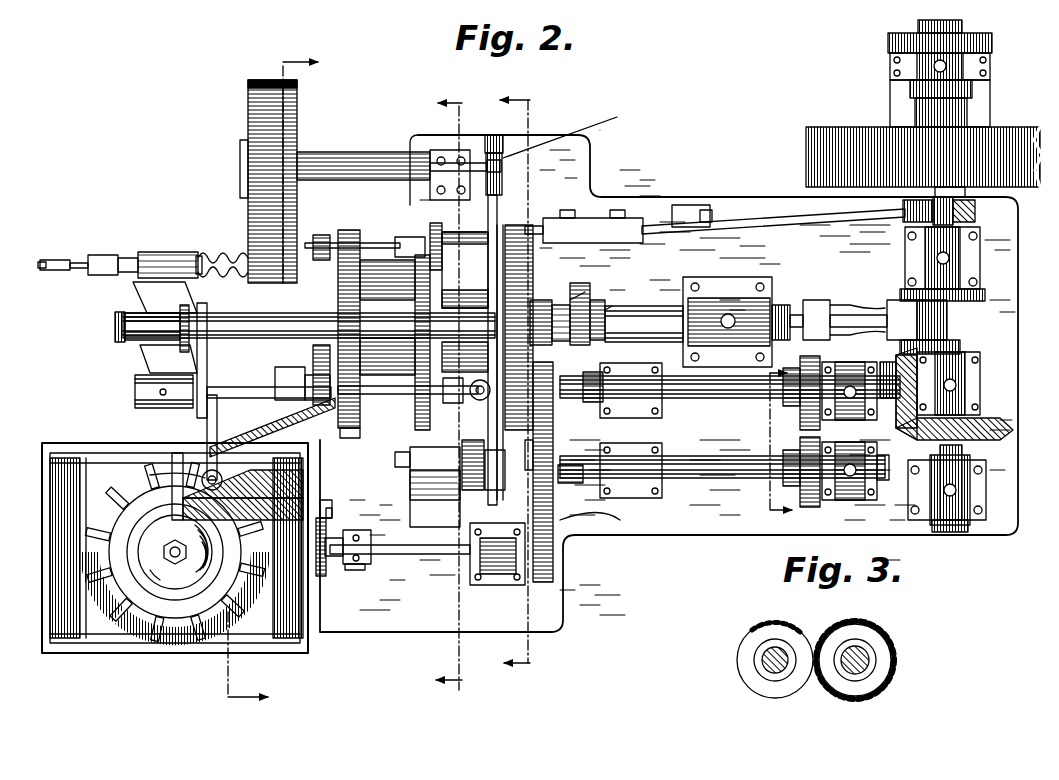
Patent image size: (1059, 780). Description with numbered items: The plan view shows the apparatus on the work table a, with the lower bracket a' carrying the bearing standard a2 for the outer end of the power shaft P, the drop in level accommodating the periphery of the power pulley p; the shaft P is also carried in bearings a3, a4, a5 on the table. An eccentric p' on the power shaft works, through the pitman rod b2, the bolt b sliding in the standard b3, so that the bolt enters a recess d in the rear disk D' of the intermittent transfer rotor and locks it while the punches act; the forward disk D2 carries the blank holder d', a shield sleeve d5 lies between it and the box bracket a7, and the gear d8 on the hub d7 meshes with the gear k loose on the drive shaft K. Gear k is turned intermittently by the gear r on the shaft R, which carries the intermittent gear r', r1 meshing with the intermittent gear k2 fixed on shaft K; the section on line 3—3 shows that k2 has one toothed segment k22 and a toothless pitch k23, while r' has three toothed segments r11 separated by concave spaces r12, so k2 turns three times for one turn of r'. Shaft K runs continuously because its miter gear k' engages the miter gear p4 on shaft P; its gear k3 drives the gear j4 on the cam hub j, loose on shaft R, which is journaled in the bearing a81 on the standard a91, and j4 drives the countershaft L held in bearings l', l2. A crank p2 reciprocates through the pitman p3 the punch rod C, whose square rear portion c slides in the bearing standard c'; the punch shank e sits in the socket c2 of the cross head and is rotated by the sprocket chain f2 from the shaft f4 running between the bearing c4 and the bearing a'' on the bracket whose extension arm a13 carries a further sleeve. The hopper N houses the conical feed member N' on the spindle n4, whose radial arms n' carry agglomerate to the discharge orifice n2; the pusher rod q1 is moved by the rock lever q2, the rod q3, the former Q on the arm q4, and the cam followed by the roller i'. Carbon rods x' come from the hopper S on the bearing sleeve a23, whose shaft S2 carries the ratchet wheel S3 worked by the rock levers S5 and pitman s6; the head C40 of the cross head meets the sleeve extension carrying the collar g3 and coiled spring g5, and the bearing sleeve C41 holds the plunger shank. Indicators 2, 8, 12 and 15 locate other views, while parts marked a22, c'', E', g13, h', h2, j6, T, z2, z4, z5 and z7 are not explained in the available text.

In FIG. 2, the section line 2 is at (550, 585).
In FIG. 2, the section line 3 is at (773, 444).
In FIG. 2, the section line 8 is at (522, 387).
In FIG. 2, the section line 12 is at (261, 386).
In FIG. 2, the section line 15 is at (460, 395).
In FIG. 2, the base plate a is at (669, 381).
In FIG. 2, the standard a' is at (956, 103).
In FIG. 2, the bearing cap a2 is at (890, 70).
In FIG. 2, the bearing a3 is at (980, 262).
In FIG. 2, the bearing a4 is at (982, 390).
In FIG. 2, the bearing a5 is at (985, 494).
In FIG. 2, the gear a7 is at (420, 424).
In FIG. 2, the sleeve a13 is at (465, 302).
In FIG. 2, the gear a22 is at (438, 230).
In FIG. 2, the cylinder a23 is at (385, 162).
In FIG. 2, the bracket a81 is at (435, 487).
In FIG. 2, the lug a91 is at (410, 452).
In FIG. 2, the main shaft a'' is at (309, 326).
In FIG. 2, the rod coupling b is at (672, 212).
In FIG. 2, the rod b2 is at (745, 212).
In FIG. 2, the slide box b3 is at (584, 227).
In FIG. 2, the shaft c is at (644, 323).
In FIG. 2, the bearing c' is at (736, 322).
In FIG. 2, the sleeve c'' is at (152, 314).
In FIG. 2, the block c2 is at (135, 392).
In FIG. 2, the bearing flange c4 is at (125, 314).
In FIG. 2, the coupling C is at (790, 306).
In FIG. 2, the slide C40 is at (158, 255).
In FIG. 2, the rod C41 is at (93, 258).
In FIG. 2, the clutch d is at (550, 302).
In FIG. 2, the bracket d' is at (167, 363).
In FIG. 2, the gear d5 is at (385, 290).
In FIG. 2, the collar d7 is at (612, 306).
In FIG. 2, the gear d8 is at (585, 292).
In FIG. 2, the lever D' is at (563, 202).
In FIG. 2, the gear D2 is at (352, 232).
In FIG. 2, the rod e is at (210, 412).
In FIG. 2, the guide E' is at (272, 427).
In FIG. 2, the rod f2 is at (236, 386).
In FIG. 2, the shaft gear f4 is at (246, 330).
In FIG. 2, the collar g3 is at (198, 256).
In FIG. 2, the spring g5 is at (236, 262).
In FIG. 2, the rod g13 is at (24, 266).
In FIG. 2, the lever h' is at (195, 349).
In FIG. 2, the shelf h2 is at (290, 428).
In FIG. 2, the bracket i' is at (483, 465).
In FIG. 2, the gear j is at (536, 470).
In FIG. 2, the arm j4 is at (560, 520).
In FIG. 2, the pin j6 is at (530, 450).
In FIG. 2, the gear k is at (594, 372).
In FIG. 2, the bevel gear k' is at (877, 367).
In FIG. 2, the gear k2 is at (808, 364).
In FIG. 3, the gear k2 is at (739, 683).
In FIG. 2, the gear k3 is at (575, 385).
In FIG. 3, the teeth k22 is at (768, 626).
In FIG. 3, the rim k23 is at (740, 648).
In FIG. 2, the shaft K is at (730, 391).
In FIG. 3, the shaft K is at (765, 670).
In FIG. 2, the rod L is at (370, 560).
In FIG. 2, the bearing l' is at (497, 554).
In FIG. 2, the block l2 is at (348, 547).
In FIG. 2, the pins n' is at (192, 572).
In FIG. 2, the pawl n2 is at (222, 480).
In FIG. 2, the hub n4 is at (169, 553).
In FIG. 2, the box N is at (175, 548).
In FIG. 2, the wheel N' is at (175, 565).
In FIG. 2, the gear wheel p is at (924, 157).
In FIG. 2, the collar p' is at (971, 211).
In FIG. 2, the block p2 is at (972, 330).
In FIG. 2, the coupling p3 is at (856, 316).
In FIG. 2, the bevel gear p4 is at (975, 436).
In FIG. 2, the shaft P is at (950, 14).
In FIG. 2, the lever q1 is at (150, 475).
In FIG. 2, the arm q2 is at (205, 432).
In FIG. 2, the rod q3 is at (266, 385).
In FIG. 2, the gear q4 is at (356, 420).
In FIG. 2, the block Q is at (316, 394).
In FIG. 2, the gear r is at (609, 519).
In FIG. 3, the shaft r' is at (855, 628).
In FIG. 2, the gear r1 is at (815, 510).
In FIG. 3, the teeth r11 is at (828, 625).
In FIG. 3, the teeth r12 is at (873, 626).
In FIG. 2, the shaft R is at (378, 480).
In FIG. 3, the shaft R is at (866, 664).
In FIG. 2, the shaft s6 is at (500, 210).
In FIG. 2, the column S is at (250, 120).
In FIG. 2, the collar S2 is at (488, 158).
In FIG. 2, the gear S3 is at (498, 140).
In FIG. 2, the lever S5 is at (572, 130).
In FIG. 2, the lever T is at (470, 458).
In FIG. 2, the key x' is at (227, 167).
In FIG. 2, the block z2 is at (362, 572).
In FIG. 2, the rack z4 is at (330, 585).
In FIG. 2, the pin z5 is at (331, 514).
In FIG. 2, the stop z7 is at (327, 498).